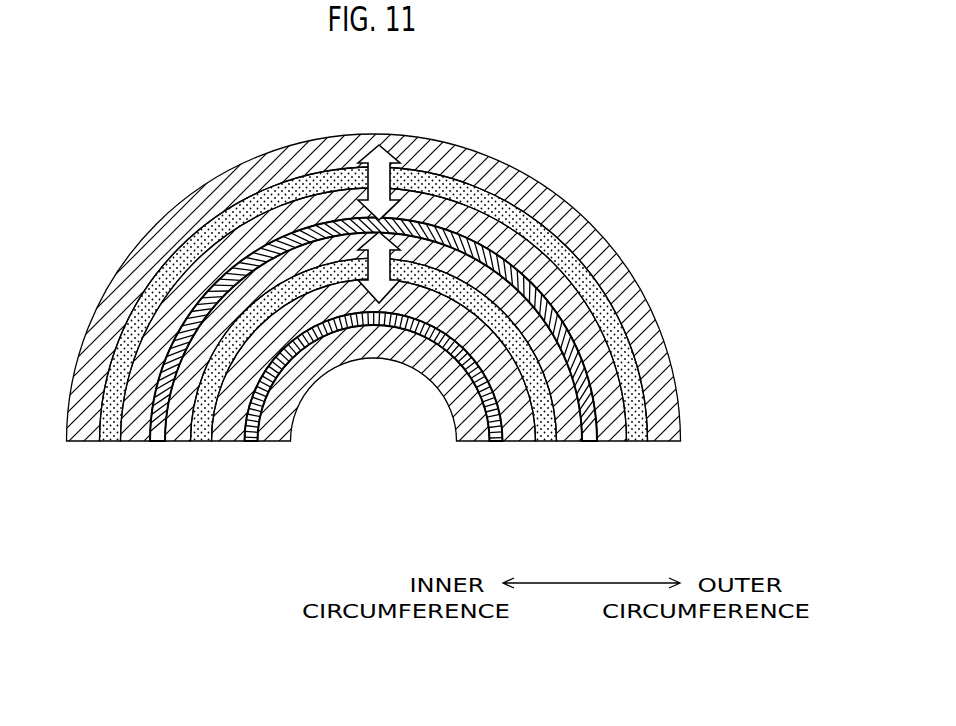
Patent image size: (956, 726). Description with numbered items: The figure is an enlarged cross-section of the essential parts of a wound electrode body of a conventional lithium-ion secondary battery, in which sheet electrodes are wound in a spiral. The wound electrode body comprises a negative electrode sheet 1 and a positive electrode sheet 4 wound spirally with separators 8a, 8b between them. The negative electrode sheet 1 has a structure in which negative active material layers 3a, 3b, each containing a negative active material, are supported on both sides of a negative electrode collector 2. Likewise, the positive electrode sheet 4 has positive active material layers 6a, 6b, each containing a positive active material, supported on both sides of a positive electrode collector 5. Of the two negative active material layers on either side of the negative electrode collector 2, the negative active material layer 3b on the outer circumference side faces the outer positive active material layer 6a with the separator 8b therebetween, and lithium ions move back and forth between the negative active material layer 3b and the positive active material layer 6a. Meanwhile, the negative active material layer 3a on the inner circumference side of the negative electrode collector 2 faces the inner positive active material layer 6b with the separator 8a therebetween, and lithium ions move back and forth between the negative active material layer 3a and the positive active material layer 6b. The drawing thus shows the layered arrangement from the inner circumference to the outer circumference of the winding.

The negative electrode sheet 1 is at (379, 367).
The negative electrode collector 2 is at (585, 437).
The negative active material layer 3a is at (373, 369).
The negative active material layer 3b is at (608, 430).
The positive electrode sheet 4 is at (367, 413).
The positive electrode collector 5 is at (248, 438).
The positive active material layer 6a is at (230, 430).
The positive active material layer 6b is at (645, 312).
The separator 8a is at (542, 437).
The separator 8b is at (523, 222).